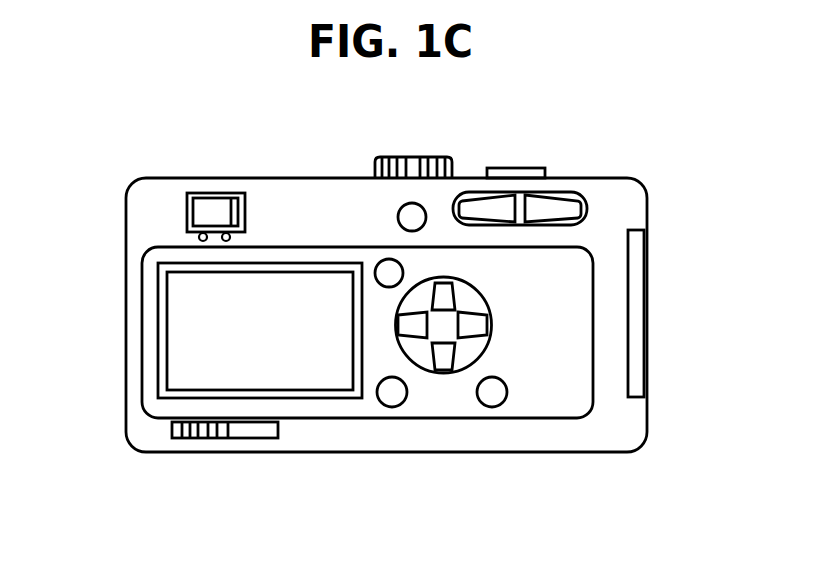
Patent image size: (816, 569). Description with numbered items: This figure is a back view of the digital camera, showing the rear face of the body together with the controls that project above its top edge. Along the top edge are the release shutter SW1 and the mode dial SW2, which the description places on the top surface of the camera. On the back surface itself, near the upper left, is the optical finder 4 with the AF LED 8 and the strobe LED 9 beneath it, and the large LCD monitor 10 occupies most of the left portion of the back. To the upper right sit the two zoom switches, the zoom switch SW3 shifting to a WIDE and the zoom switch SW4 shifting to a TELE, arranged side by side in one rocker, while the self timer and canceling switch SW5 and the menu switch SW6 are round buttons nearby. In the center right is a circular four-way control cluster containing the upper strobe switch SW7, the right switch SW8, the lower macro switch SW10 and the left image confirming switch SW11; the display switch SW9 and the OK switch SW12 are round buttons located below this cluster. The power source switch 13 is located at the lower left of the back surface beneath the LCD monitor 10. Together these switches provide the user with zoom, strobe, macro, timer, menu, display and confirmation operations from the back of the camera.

The optical finder 4 is at (197, 217).
The AF LED 8 is at (201, 194).
The strobe LED 9 is at (222, 194).
The LCD monitor 10 is at (185, 338).
The power source switch 13 is at (177, 429).
The release shutter SW1 is at (517, 168).
The mode dial SW2 is at (414, 156).
The zoom switch shifting to a WIDE SW3 is at (467, 203).
The zoom switch shifting to a TELE SW4 is at (573, 203).
The self timer and canceling switch SW5 is at (402, 210).
The menu switch SW6 is at (390, 272).
The upper strobe switch SW7 is at (443, 291).
The right switch SW8 is at (480, 325).
The display switch SW9 is at (492, 396).
The lower macro switch SW10 is at (443, 365).
The left image confirming switch SW11 is at (402, 325).
The OK switch SW12 is at (391, 396).